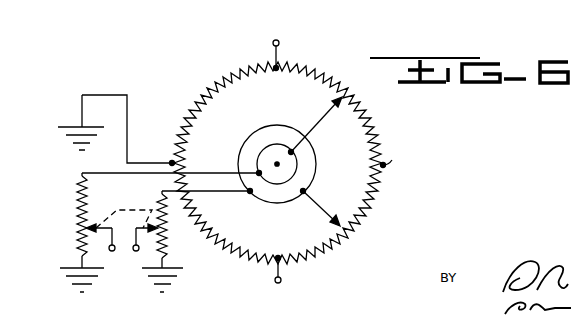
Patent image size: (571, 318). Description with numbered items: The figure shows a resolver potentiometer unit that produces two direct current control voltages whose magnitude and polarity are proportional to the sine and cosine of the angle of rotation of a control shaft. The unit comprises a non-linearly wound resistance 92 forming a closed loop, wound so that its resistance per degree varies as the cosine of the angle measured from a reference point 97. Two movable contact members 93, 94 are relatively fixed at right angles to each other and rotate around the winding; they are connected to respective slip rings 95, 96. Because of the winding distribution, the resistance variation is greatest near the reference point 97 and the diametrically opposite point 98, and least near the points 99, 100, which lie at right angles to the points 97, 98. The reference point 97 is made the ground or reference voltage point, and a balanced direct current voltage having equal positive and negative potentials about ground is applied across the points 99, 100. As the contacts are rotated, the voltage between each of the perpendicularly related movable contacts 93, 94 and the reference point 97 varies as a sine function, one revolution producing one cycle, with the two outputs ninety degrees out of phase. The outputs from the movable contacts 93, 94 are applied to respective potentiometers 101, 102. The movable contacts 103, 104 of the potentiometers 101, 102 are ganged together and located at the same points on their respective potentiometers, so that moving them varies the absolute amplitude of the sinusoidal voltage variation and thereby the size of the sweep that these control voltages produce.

The non-linearly wound resistance 92 is at (214, 86).
The movable contact member 93 is at (312, 131).
The movable contact member 94 is at (323, 208).
The slip ring 95 is at (258, 155).
The slip ring 96 is at (318, 165).
The reference point 97 is at (159, 163).
The point of maximum resistance 98 is at (395, 158).
The point of minimum resistance variation 99 is at (276, 58).
The point of minimum resistance variation 100 is at (279, 268).
The potentiometer 101 is at (78, 247).
The potentiometer 102 is at (168, 228).
The movable contact 103 is at (96, 226).
The movable contact 104 is at (154, 240).